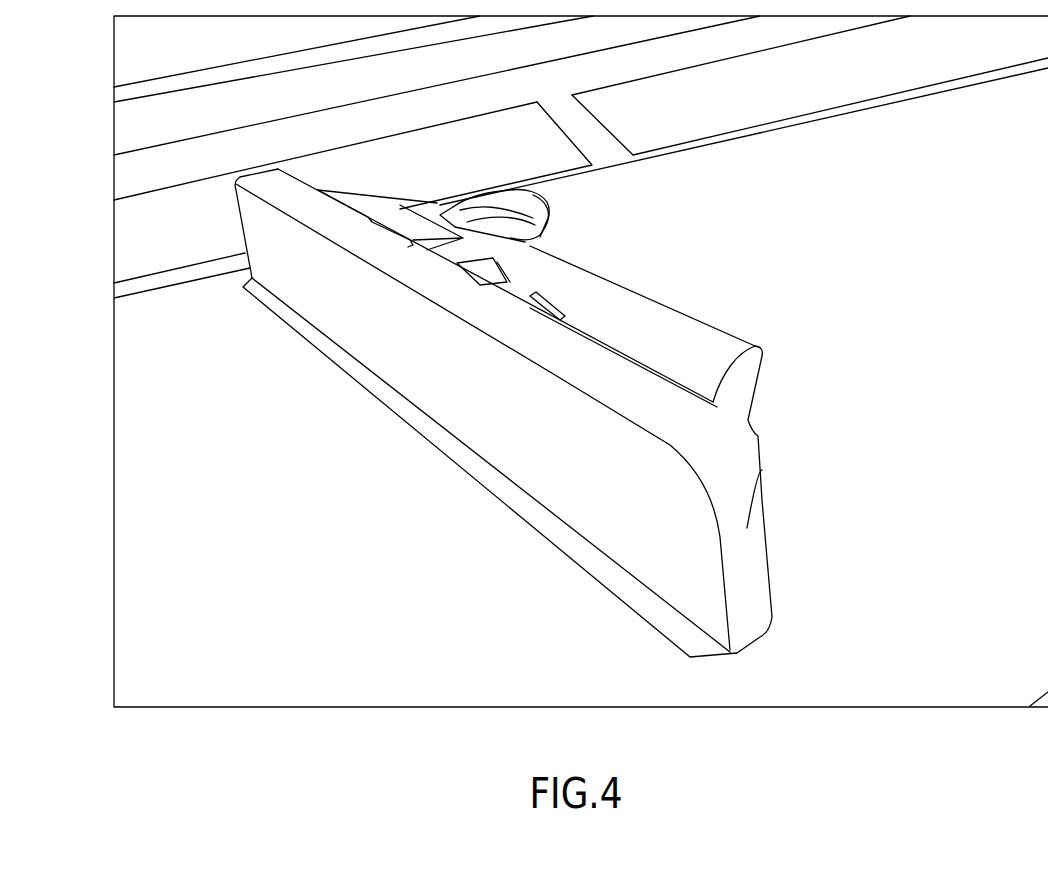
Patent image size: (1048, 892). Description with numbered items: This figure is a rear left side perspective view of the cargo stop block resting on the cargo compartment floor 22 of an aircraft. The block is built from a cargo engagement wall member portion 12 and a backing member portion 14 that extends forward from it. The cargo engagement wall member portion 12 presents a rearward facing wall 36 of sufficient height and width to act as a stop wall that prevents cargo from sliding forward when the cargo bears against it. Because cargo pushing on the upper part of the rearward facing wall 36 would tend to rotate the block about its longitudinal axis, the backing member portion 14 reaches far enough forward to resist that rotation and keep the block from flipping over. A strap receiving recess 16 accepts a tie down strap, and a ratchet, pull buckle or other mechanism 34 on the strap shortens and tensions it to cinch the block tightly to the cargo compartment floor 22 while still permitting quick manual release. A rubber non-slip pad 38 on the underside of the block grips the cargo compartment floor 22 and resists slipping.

The cargo engagement wall member portion 12 is at (503, 371).
The backing member portion 14 is at (632, 338).
The strap receiving recess 16 is at (673, 378).
The cargo compartment floor 22 is at (933, 414).
The ratchet, pull buckle or other mechanism 34 is at (483, 262).
The rearward facing wall 36 is at (459, 379).
The non-slip pad 38 is at (540, 543).